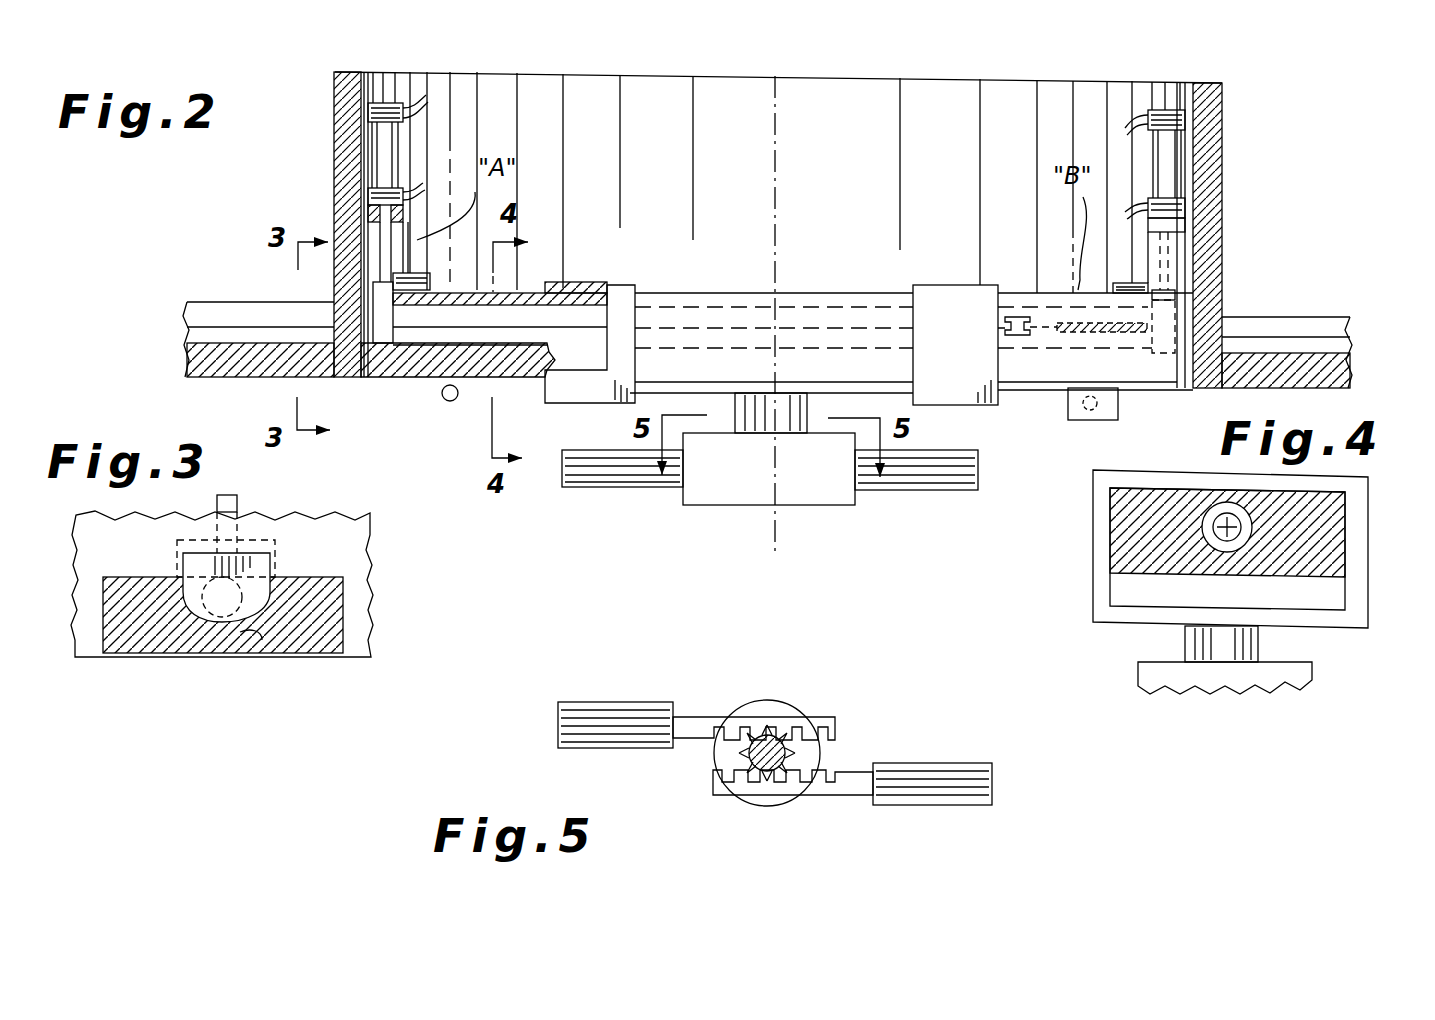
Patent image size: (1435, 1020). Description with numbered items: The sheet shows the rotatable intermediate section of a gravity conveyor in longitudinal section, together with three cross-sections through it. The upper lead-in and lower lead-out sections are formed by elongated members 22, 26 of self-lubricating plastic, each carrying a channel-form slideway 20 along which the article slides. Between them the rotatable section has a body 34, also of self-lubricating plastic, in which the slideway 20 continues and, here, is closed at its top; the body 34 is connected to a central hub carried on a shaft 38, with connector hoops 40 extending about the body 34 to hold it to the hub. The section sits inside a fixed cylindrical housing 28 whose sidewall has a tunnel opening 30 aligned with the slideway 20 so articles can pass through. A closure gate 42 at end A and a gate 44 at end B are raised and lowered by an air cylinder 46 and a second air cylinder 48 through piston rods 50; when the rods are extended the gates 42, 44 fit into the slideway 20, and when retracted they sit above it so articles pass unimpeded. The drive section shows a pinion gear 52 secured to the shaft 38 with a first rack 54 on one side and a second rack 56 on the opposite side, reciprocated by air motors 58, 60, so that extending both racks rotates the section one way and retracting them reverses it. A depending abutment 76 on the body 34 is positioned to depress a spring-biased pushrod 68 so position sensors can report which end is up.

In FIG. 3, the slideway 20 is at (262, 643).
In FIG. 4, the slideway 20 is at (1210, 511).
In FIG. 2, the elongated member 22 is at (230, 380).
In FIG. 3, the elongated member 22 is at (163, 655).
In FIG. 2, the elongated member 26 is at (1337, 373).
In FIG. 2, the cylindrical housing 28 is at (1222, 133).
In FIG. 3, the tunnel opening 30 is at (262, 563).
In FIG. 2, the body 34 is at (388, 379).
In FIG. 4, the body 34 is at (1315, 540).
In FIG. 4, the shaft 38 is at (1185, 640).
In FIG. 2, the connector hoops 40 is at (618, 285).
In FIG. 4, the connector hoops 40 is at (1328, 630).
In FIG. 2, the gate 42 is at (380, 290).
In FIG. 3, the gate 42 is at (190, 560).
In FIG. 2, the gate 44 is at (1200, 318).
In FIG. 2, the air cylinder 46 is at (397, 145).
In FIG. 2, the second air cylinder 48 is at (1167, 157).
In FIG. 2, the piston rods 50 is at (418, 263).
In FIG. 5, the pinion gear 52 is at (765, 785).
In FIG. 5, the first rack 54 is at (760, 720).
In FIG. 5, the second rack 56 is at (828, 785).
In FIG. 5, the air motor 58 is at (588, 705).
In FIG. 5, the air motor 60 is at (930, 797).
In FIG. 2, the pushrod 68 is at (450, 401).
In FIG. 2, the depending abutment 76 is at (1078, 420).